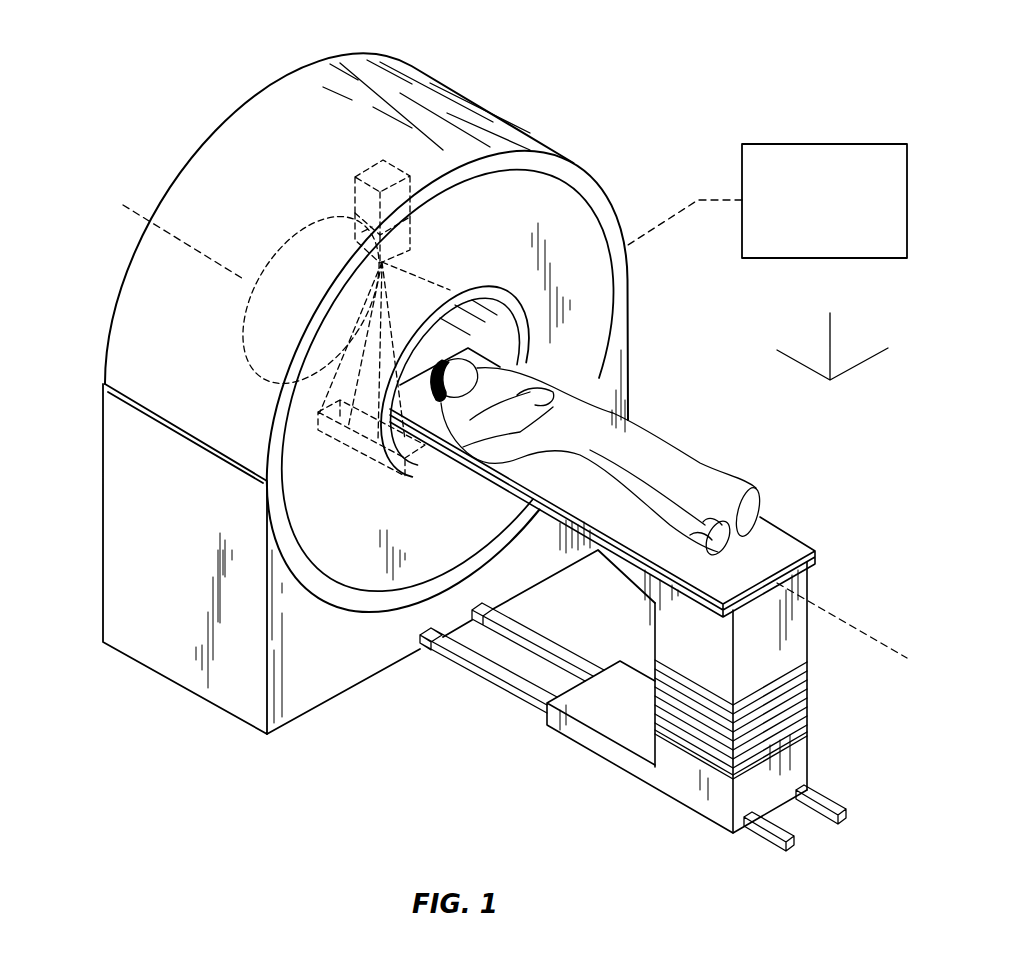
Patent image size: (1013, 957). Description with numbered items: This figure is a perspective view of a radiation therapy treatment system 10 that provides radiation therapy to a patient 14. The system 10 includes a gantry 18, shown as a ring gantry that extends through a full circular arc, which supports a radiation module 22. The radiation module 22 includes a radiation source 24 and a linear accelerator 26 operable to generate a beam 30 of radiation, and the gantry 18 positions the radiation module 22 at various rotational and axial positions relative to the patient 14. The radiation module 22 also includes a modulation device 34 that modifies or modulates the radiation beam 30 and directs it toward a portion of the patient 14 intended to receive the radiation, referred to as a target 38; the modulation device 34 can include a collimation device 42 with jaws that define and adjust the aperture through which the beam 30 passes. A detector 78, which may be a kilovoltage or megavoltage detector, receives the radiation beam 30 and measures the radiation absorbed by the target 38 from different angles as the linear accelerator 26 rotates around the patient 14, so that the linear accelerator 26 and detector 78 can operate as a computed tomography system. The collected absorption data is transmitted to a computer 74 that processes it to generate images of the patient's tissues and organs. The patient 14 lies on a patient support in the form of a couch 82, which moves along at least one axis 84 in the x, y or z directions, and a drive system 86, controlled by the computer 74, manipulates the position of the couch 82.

The radiation therapy treatment system 10 is at (645, 68).
The patient 14 is at (652, 456).
The gantry 18 is at (172, 181).
The radiation module 22 is at (376, 170).
The radiation source 24 is at (355, 182).
The linear accelerator 26 is at (367, 210).
The beam of radiation 30 is at (277, 364).
The modulation device 34 is at (384, 252).
The target 38 is at (614, 395).
The collimation device 42 is at (402, 258).
The computer 74 is at (838, 146).
The detector 78 is at (333, 441).
The couch 82 is at (770, 532).
The axis 84 is at (850, 623).
The drive system 86 is at (783, 640).